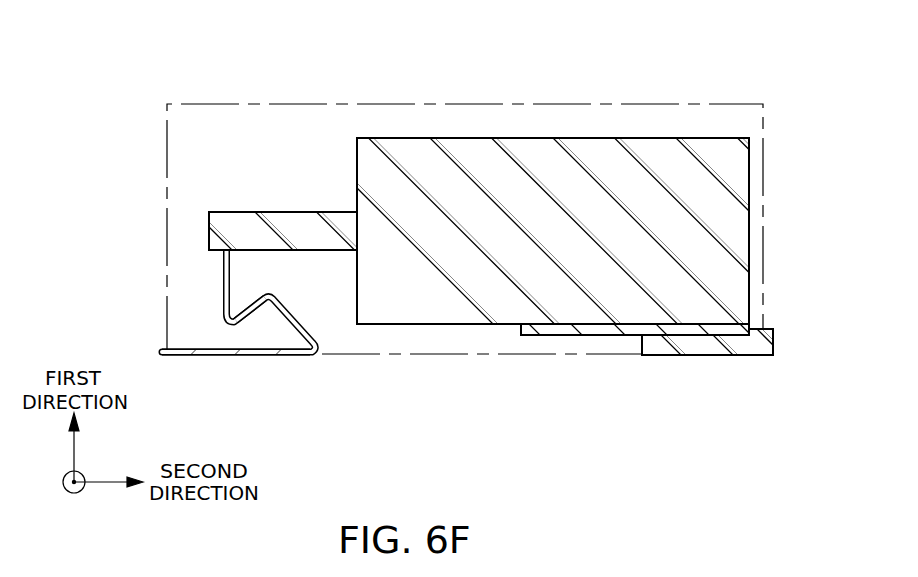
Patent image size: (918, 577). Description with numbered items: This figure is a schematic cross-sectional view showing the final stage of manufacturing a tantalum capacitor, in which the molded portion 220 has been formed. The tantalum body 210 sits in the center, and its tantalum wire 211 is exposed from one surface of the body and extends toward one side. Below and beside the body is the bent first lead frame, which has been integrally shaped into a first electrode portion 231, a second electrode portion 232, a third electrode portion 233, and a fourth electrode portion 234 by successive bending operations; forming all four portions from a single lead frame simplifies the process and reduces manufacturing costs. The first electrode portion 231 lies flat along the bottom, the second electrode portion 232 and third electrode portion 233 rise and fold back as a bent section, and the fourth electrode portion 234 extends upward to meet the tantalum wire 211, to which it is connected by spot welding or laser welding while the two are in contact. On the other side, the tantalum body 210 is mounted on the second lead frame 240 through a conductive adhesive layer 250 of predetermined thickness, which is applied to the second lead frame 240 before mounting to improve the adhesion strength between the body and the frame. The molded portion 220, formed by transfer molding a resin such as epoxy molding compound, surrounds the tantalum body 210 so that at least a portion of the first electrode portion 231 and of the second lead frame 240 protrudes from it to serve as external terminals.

The tantalum body 210 is at (575, 182).
The tantalum wire 211 is at (286, 222).
The molded portion 220 is at (713, 104).
The first electrode portion 231 is at (196, 357).
The second electrode portion 232 is at (300, 318).
The third electrode portion 233 is at (267, 308).
The fourth electrode portion 234 is at (223, 273).
The second lead frame 240 is at (702, 346).
The conductive adhesive layer 250 is at (652, 332).